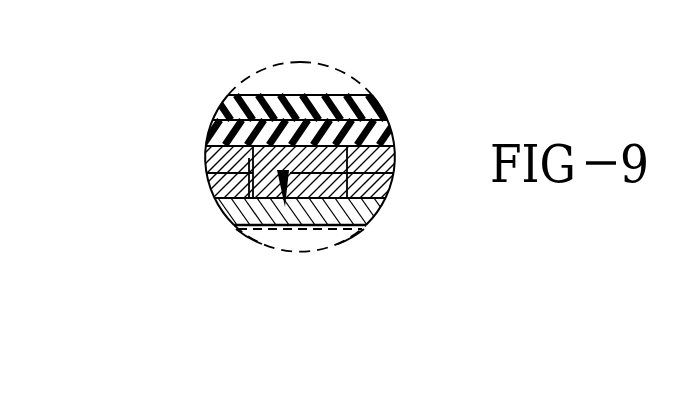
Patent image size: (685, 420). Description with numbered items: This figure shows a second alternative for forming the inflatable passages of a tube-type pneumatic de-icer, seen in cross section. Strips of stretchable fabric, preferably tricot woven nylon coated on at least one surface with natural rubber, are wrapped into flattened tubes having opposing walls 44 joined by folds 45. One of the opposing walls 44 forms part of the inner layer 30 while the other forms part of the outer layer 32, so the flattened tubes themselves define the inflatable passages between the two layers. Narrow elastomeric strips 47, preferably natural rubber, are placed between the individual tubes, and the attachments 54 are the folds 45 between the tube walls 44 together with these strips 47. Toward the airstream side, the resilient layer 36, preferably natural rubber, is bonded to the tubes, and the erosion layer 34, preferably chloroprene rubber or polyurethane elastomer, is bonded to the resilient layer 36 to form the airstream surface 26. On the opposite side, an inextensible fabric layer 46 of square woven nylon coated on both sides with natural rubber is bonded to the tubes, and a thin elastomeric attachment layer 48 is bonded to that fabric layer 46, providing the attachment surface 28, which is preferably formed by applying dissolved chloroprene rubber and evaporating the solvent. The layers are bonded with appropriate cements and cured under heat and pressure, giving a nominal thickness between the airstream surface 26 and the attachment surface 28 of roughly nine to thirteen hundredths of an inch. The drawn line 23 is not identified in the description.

The airstream surface 26 is at (279, 152).
The erosion layer 34 is at (238, 98).
The resilient layer 36 is at (224, 127).
The outer layer 32 is at (410, 95).
The inner layer 30 is at (410, 170).
The attachments 54 is at (250, 158).
The opposing walls 44 is at (248, 185).
The inextensible fabric layer 46 is at (229, 212).
The base line 23 is at (253, 227).
The thin elastomeric attachment layer 48 is at (297, 231).
The attachment surface 28 is at (330, 230).
The elastomeric strips 47 is at (357, 226).
The folds 45 is at (385, 152).